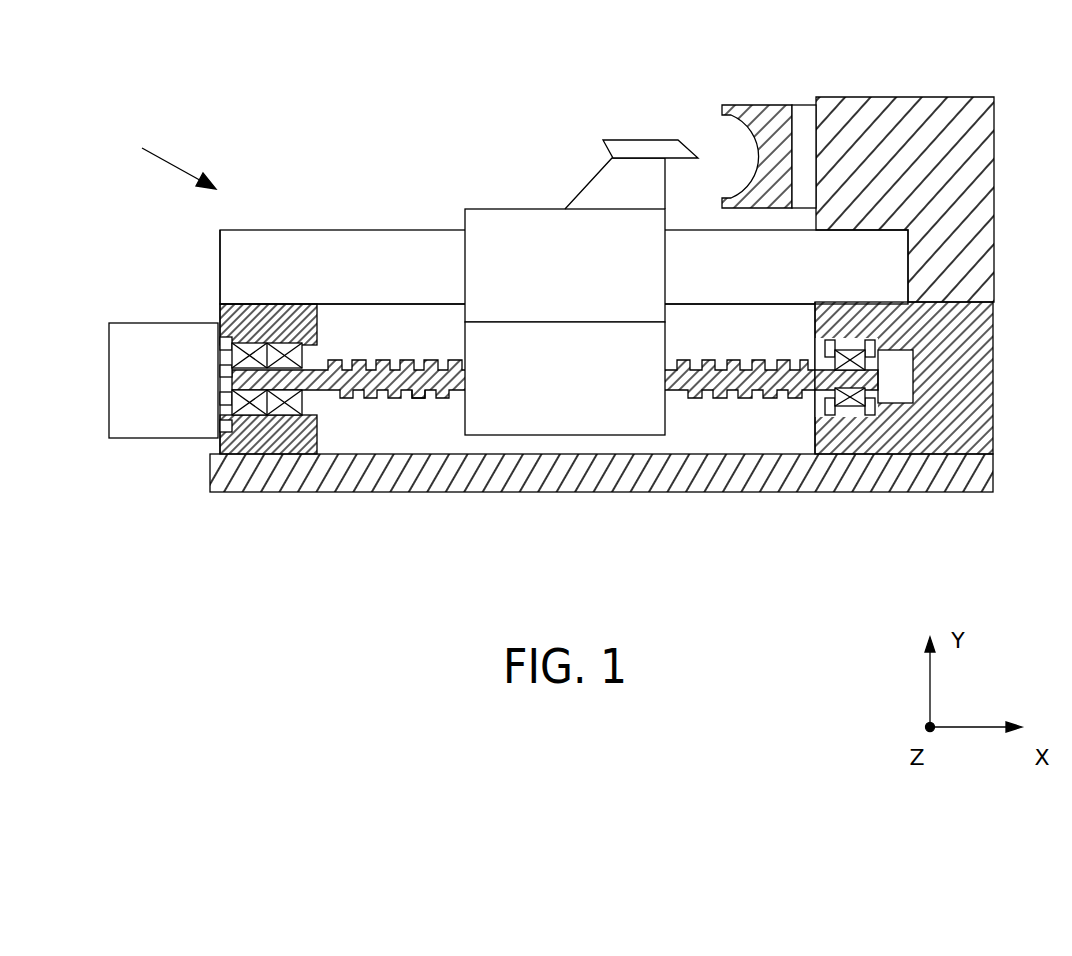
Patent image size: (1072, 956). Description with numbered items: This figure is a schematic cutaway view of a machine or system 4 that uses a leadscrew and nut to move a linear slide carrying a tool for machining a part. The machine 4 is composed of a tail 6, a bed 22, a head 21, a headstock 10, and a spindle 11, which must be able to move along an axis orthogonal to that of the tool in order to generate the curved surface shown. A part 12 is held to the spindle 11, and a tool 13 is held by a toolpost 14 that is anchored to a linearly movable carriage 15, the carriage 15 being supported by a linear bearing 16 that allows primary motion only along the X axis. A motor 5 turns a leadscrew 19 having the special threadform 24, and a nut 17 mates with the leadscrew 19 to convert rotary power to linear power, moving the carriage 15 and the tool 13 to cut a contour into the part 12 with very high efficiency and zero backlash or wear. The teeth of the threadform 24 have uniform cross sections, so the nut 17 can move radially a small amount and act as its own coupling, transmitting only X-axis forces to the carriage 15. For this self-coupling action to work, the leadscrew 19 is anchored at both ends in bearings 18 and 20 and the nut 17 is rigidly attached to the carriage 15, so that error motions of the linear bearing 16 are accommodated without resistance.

The machine or system 4 is at (166, 161).
The motor 5 is at (125, 406).
The tail 6 is at (222, 312).
The headstock 10 is at (995, 152).
The spindle 11 is at (808, 104).
The part 12 is at (740, 150).
The tool 13 is at (637, 145).
The toolpost 14 is at (603, 187).
The carriage 15 is at (497, 222).
The linear bearing 16 is at (291, 252).
The nut 17 is at (552, 410).
The bearing 18 is at (217, 440).
The leadscrew 19 is at (372, 372).
The bearing 20 is at (823, 355).
The head 21 is at (995, 400).
The bed 22 is at (272, 480).
The threadform 24 is at (418, 398).